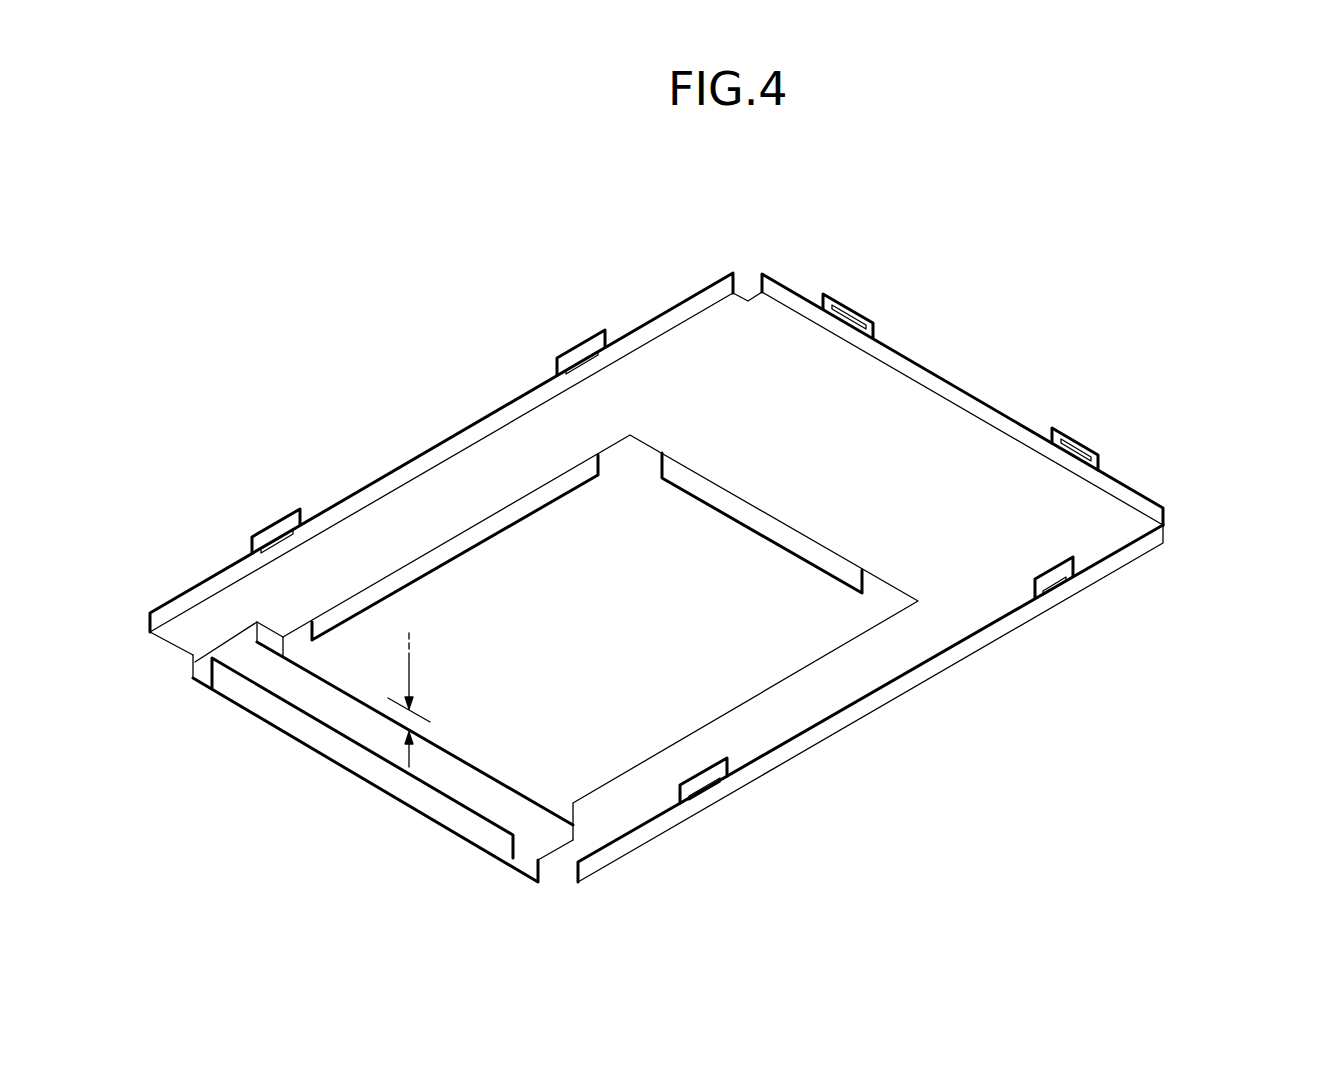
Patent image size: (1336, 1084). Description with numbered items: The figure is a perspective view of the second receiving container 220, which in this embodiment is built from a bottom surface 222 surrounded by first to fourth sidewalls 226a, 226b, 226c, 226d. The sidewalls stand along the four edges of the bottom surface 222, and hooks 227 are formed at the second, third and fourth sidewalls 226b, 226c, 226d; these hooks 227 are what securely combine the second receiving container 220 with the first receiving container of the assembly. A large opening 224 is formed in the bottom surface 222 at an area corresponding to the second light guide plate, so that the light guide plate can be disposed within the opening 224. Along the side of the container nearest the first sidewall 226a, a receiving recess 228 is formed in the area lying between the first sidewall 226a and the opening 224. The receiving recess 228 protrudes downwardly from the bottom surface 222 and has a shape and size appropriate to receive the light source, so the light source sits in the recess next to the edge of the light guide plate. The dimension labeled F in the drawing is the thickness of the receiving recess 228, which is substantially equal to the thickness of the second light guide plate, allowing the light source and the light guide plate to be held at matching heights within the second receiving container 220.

The second receiving container 220 is at (770, 200).
The bottom surface 222 is at (1105, 522).
The opening 224 is at (788, 630).
The first sidewall 226a is at (440, 805).
The second sidewall 226b is at (460, 440).
The third sidewall 226c is at (962, 398).
The fourth sidewall 226d is at (835, 735).
The hooks 227 is at (1088, 436).
The receiving recess 228 is at (490, 800).